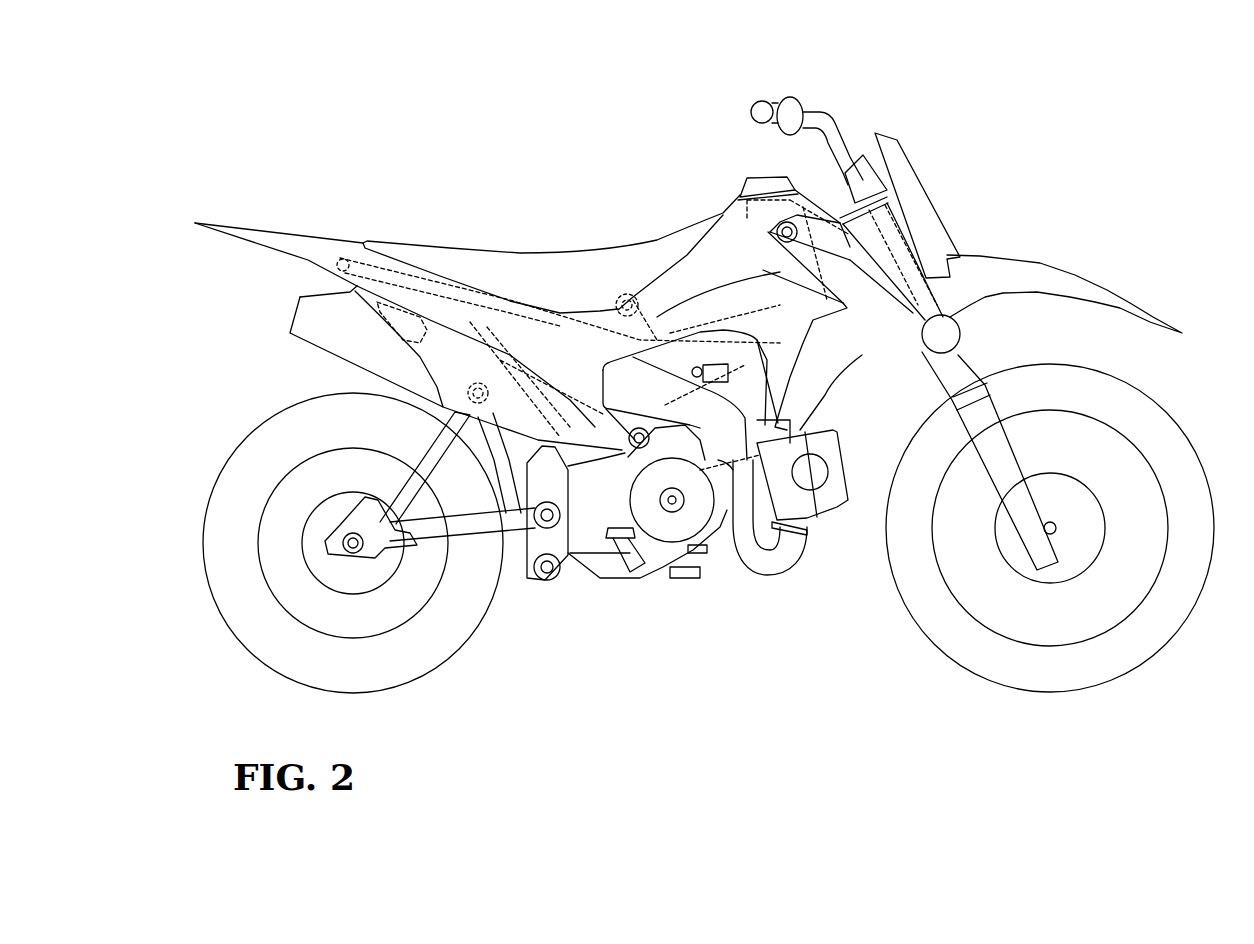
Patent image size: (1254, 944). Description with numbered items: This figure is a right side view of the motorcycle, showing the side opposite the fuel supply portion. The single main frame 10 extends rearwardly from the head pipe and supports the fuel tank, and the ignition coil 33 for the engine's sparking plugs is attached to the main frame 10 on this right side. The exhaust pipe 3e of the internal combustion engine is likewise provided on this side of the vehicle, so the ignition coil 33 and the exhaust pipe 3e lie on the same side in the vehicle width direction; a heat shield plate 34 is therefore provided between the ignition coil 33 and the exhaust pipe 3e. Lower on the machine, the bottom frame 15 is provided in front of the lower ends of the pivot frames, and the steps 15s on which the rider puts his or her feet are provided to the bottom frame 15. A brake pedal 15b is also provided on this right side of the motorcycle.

The main frame 10 is at (662, 365).
The heat shield plate 34 is at (637, 388).
The ignition coil 33 is at (713, 370).
The bottom frame 15 is at (600, 558).
The steps 15s is at (627, 572).
The brake pedal 15b is at (700, 560).
The exhaust pipe 3e is at (788, 560).